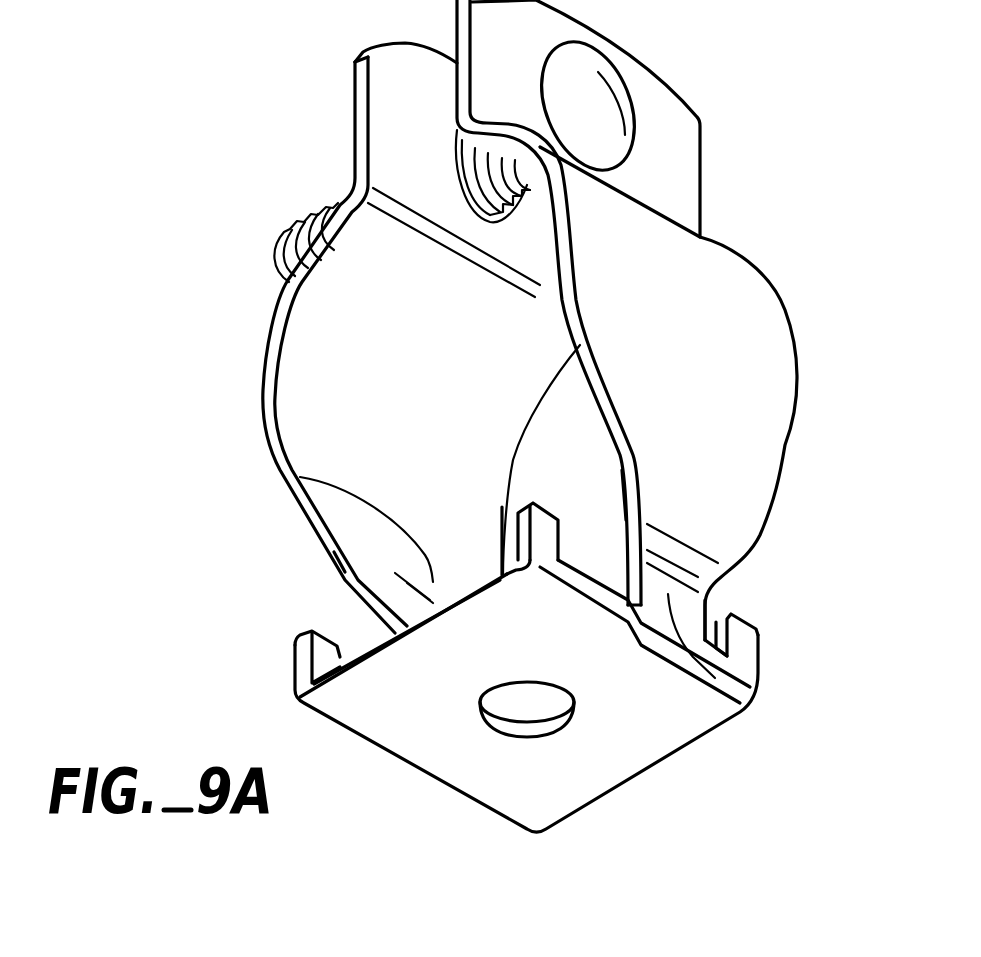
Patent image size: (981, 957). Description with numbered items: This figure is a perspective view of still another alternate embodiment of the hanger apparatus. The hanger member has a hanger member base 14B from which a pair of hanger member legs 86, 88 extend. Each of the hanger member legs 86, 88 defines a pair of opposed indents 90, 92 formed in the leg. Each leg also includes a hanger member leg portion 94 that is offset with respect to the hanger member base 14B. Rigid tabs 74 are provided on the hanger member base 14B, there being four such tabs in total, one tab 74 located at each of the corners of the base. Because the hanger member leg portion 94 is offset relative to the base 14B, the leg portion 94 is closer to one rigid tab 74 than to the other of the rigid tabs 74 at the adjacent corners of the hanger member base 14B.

The hanger member base 14B is at (633, 740).
The rigid tab 74 is at (527, 533).
The hanger member leg 86 is at (313, 430).
The hanger member leg 88 is at (763, 353).
The indent 90 is at (334, 552).
The indent 92 is at (727, 573).
The hanger member leg portion 94 is at (300, 477).